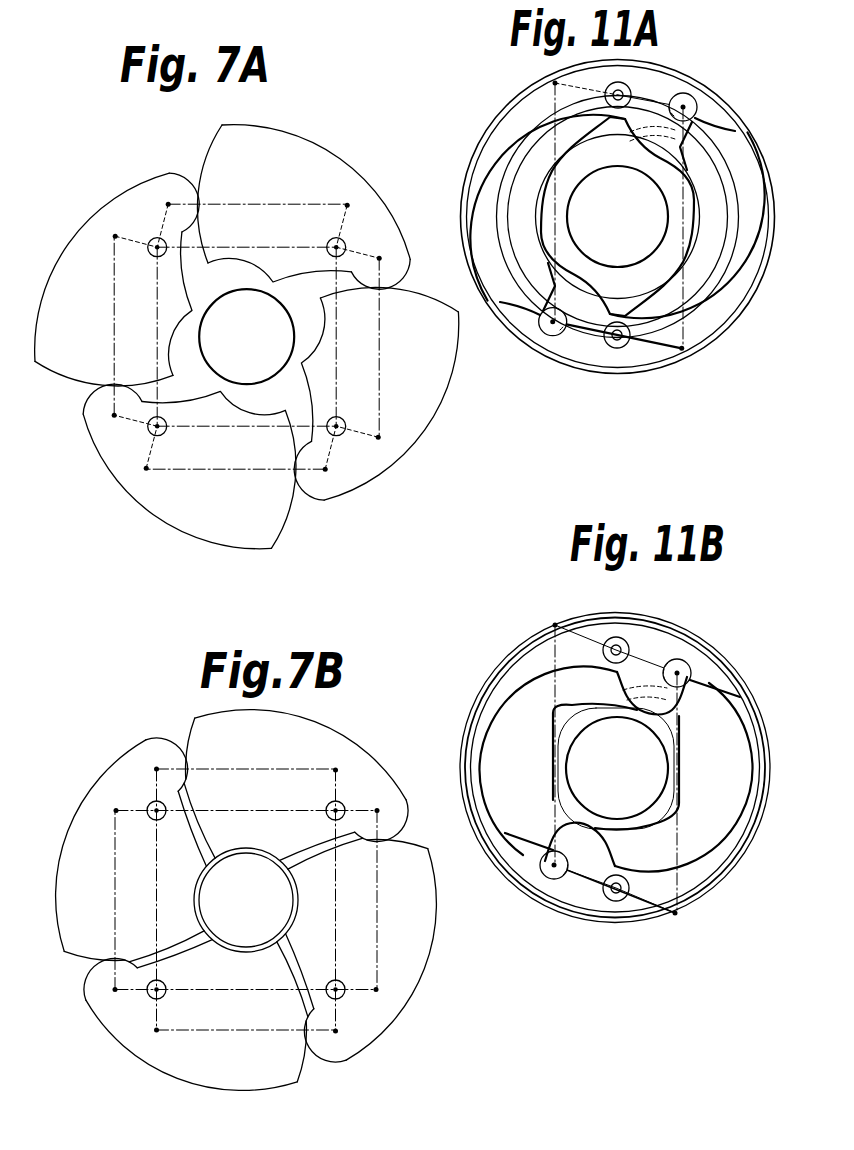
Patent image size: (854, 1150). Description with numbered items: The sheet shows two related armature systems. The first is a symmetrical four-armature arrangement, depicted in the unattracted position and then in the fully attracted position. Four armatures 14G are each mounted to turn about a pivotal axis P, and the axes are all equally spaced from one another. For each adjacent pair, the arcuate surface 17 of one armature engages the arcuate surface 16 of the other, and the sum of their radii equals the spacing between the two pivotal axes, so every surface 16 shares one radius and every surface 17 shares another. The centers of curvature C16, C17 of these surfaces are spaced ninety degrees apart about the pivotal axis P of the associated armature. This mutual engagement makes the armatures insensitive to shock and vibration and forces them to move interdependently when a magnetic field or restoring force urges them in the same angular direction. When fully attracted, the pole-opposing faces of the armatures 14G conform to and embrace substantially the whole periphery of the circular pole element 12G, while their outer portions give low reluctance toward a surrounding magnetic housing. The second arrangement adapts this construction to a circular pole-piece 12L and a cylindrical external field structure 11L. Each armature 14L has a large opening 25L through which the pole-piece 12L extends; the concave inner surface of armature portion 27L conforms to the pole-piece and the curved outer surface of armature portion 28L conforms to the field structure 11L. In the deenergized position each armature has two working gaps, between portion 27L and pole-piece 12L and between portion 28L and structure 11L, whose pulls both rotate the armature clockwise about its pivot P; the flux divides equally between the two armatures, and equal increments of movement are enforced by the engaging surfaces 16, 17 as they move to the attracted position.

In FIG. 7A, the circular pole element 12G is at (275, 339).
In FIG. 7B, the circular pole element 12G is at (280, 912).
In FIG. 7A, the armature 14G is at (290, 152).
In FIG. 7B, the armature 14G is at (246, 900).
In FIG. 7A, the arcuate surface 16 is at (198, 188).
In FIG. 7B, the arcuate surface 16 is at (170, 748).
In FIG. 11A, the arcuate surface 16 is at (696, 111).
In FIG. 11B, the arcuate surface 16 is at (691, 676).
In FIG. 7A, the arcuate surface 17 is at (213, 135).
In FIG. 7B, the arcuate surface 17 is at (192, 730).
In FIG. 11A, the arcuate surface 17 is at (693, 122).
In FIG. 11B, the arcuate surface 17 is at (713, 693).
In FIG. 7A, the pivotal axis P is at (338, 246).
In FIG. 7B, the pivotal axis P is at (338, 808).
In FIG. 11A, the pivotal axis P is at (624, 88).
In FIG. 11B, the pivotal axis P is at (616, 637).
In FIG. 7A, the center of curvature C16 is at (168, 203).
In FIG. 7B, the center of curvature C16 is at (156, 768).
In FIG. 11A, the center of curvature C16 is at (686, 108).
In FIG. 11B, the center of curvature C16 is at (680, 672).
In FIG. 7A, the center of curvature C17 is at (347, 204).
In FIG. 7B, the center of curvature C17 is at (336, 769).
In FIG. 11A, the center of curvature C17 is at (553, 83).
In FIG. 11B, the center of curvature C17 is at (555, 622).
In FIG. 11A, the external field structure 11L is at (750, 143).
In FIG. 11B, the external field structure 11L is at (672, 630).
In FIG. 11A, the pole-piece 12L is at (590, 182).
In FIG. 11B, the pole-piece 12L is at (582, 740).
In FIG. 11A, the armature 14L is at (647, 108).
In FIG. 11B, the armature 14L is at (530, 665).
In FIG. 11A, the opening 25L is at (690, 285).
In FIG. 11A, the armature portion 27L is at (672, 167).
In FIG. 11B, the armature portion 27L is at (553, 753).
In FIG. 11A, the armature portion 28L is at (538, 123).
In FIG. 11B, the armature portion 28L is at (495, 695).